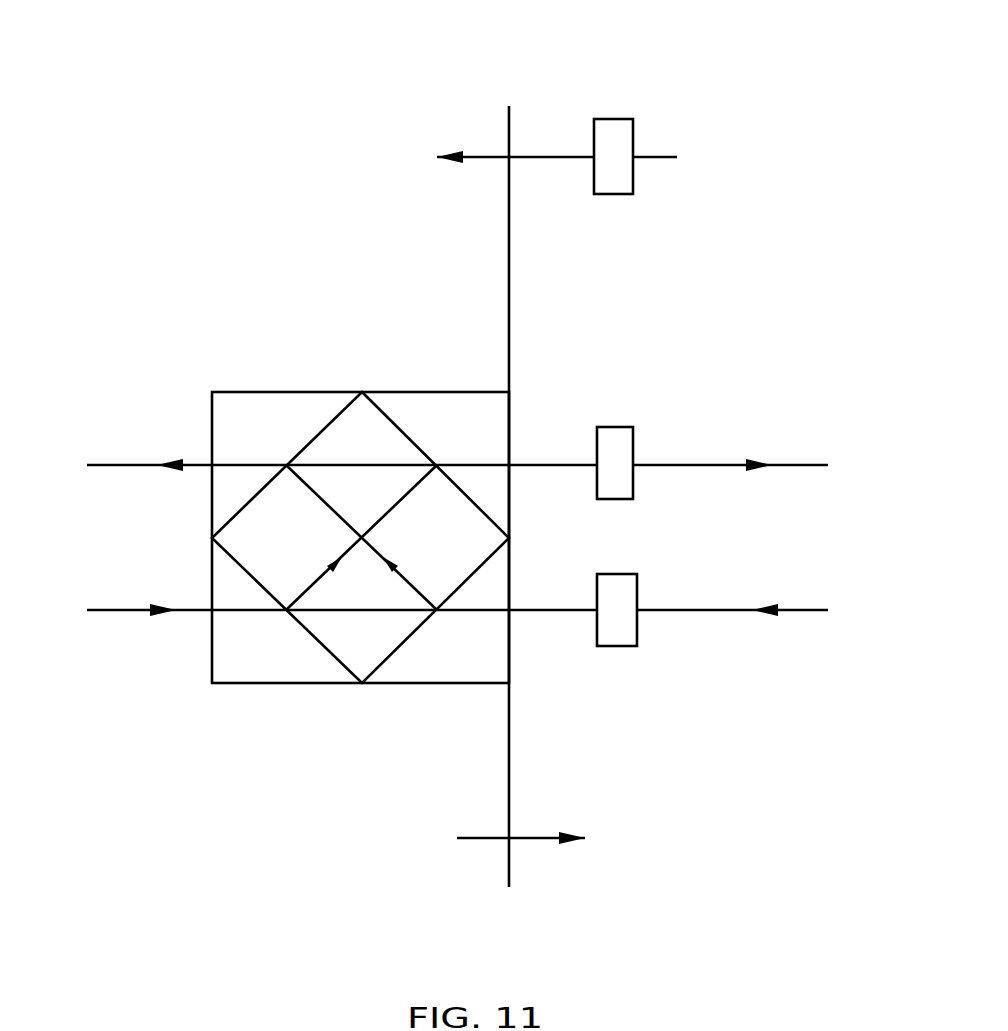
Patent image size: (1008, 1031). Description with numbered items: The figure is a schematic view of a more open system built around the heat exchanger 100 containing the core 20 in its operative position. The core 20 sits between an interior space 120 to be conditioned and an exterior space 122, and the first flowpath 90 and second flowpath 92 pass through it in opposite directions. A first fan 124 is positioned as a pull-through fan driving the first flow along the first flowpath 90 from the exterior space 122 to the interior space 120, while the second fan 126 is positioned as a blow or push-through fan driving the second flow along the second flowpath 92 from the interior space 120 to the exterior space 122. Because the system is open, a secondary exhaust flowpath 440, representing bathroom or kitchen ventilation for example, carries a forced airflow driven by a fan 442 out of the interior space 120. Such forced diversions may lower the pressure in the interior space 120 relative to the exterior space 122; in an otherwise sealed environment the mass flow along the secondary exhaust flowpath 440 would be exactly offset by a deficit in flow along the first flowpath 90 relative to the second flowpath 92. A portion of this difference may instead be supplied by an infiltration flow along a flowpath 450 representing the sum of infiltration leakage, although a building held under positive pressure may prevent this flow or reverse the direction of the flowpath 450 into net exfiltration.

The heat exchanger 100 is at (692, 305).
The core 20 is at (364, 436).
The exterior space 122 is at (122, 553).
The interior space 120 is at (835, 543).
The second flowpath 92 is at (720, 463).
The first flowpath 90 is at (722, 612).
The first fan 124 is at (615, 427).
The second fan 126 is at (615, 648).
The secondary exhaust flowpath 440 is at (538, 157).
The fan 442 is at (612, 119).
The infiltration flowpath 450 is at (470, 840).